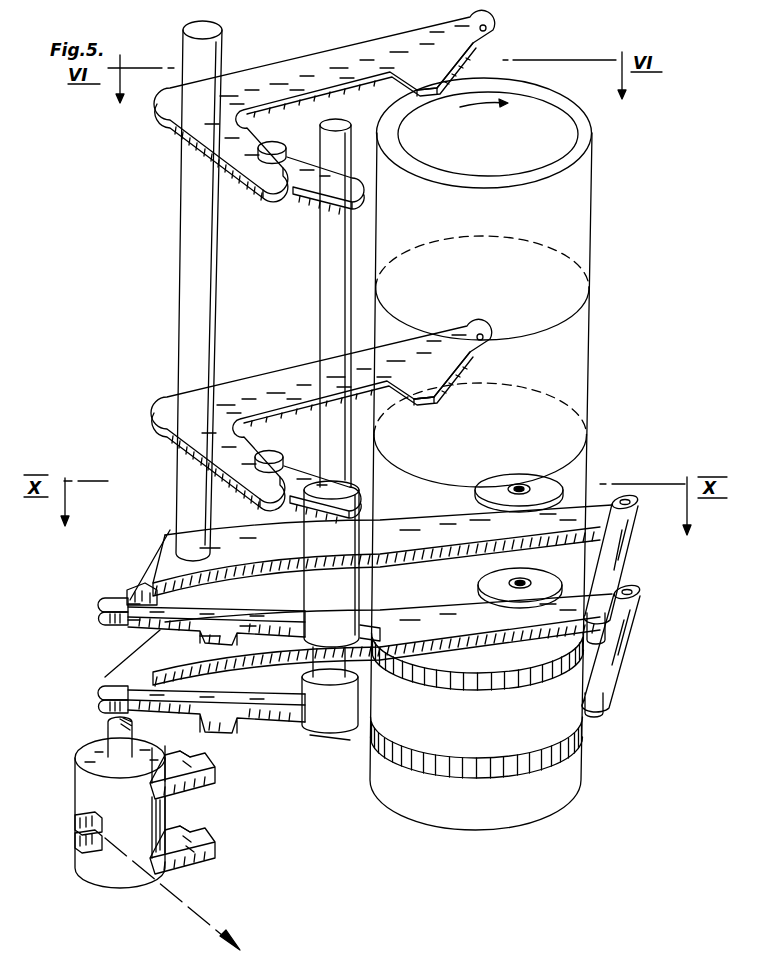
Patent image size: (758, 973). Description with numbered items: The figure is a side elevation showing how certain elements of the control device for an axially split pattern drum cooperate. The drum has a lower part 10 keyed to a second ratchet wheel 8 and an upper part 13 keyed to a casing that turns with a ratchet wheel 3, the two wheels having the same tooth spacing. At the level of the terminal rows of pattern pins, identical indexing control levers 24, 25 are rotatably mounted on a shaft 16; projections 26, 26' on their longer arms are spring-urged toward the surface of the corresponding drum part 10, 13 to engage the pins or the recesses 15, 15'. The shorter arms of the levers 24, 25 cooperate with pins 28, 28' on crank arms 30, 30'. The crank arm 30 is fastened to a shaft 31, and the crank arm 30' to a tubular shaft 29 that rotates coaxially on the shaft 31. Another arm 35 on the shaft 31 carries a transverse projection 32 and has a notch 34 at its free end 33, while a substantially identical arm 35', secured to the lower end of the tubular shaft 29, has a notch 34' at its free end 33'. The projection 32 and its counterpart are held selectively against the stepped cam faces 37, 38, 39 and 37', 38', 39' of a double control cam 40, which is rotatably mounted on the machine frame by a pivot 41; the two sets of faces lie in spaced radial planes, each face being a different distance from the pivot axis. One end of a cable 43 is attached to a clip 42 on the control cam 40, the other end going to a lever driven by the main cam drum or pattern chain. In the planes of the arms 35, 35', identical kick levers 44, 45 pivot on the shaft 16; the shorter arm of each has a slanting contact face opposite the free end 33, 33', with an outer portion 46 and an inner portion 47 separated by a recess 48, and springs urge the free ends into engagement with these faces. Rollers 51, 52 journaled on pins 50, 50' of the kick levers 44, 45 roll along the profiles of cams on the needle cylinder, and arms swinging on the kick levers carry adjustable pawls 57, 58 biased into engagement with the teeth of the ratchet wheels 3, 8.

The ratchet wheel 3 is at (565, 752).
The second ratchet wheel 8 is at (588, 672).
The lower part of pattern drum 10 is at (588, 381).
The upper part of pattern drum 13 is at (589, 224).
The recess 15 is at (488, 134).
The recess 15' is at (427, 410).
The shaft 16 is at (180, 236).
The indexing control lever 24 is at (158, 414).
The indexing control lever 25 is at (160, 108).
The projection 26 is at (453, 66).
The projection 26' is at (447, 387).
The pin 28 is at (285, 141).
The pin 28' is at (284, 450).
The tubular shaft 29 is at (318, 600).
The crank arm 30 is at (321, 192).
The crank arm 30' is at (312, 494).
The shaft 31 is at (322, 321).
The transverse projection 32 is at (215, 622).
The free end 33 is at (102, 677).
The free end 33' is at (105, 587).
The notch 34 is at (97, 694).
The notch 34' is at (98, 606).
The arm 35 is at (321, 724).
The arm 35' is at (285, 649).
The cam face 37 is at (173, 824).
The cam face 37' is at (155, 750).
The cam face 38 is at (201, 824).
The cam face 38' is at (183, 742).
The cam face 39 is at (202, 844).
The cam face 39' is at (209, 768).
The double control cam 40 is at (82, 797).
The pivot 41 is at (106, 733).
The clip 42 is at (76, 842).
The cable 43 is at (188, 905).
The kick lever 44 is at (290, 562).
The kick lever 45 is at (395, 612).
The outer portion 46 is at (112, 620).
The inner portion 47 is at (160, 580).
The recess 48 is at (137, 585).
The pin 50 is at (543, 567).
The pin 50' is at (533, 469).
The roller 51 is at (490, 482).
The roller 52 is at (485, 583).
The pawl 57 is at (630, 553).
The pawl 58 is at (618, 658).